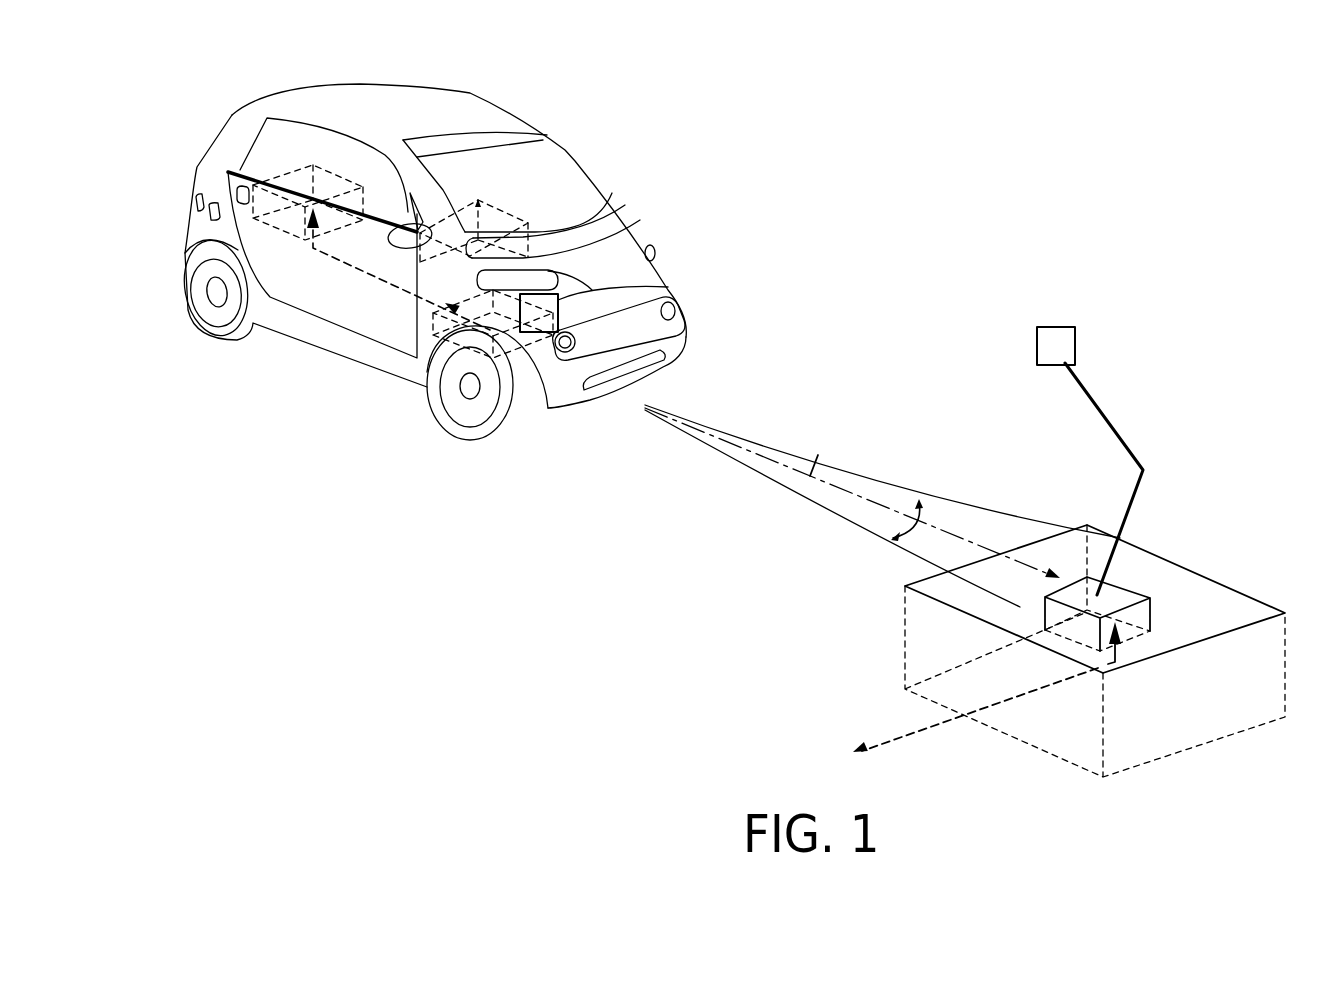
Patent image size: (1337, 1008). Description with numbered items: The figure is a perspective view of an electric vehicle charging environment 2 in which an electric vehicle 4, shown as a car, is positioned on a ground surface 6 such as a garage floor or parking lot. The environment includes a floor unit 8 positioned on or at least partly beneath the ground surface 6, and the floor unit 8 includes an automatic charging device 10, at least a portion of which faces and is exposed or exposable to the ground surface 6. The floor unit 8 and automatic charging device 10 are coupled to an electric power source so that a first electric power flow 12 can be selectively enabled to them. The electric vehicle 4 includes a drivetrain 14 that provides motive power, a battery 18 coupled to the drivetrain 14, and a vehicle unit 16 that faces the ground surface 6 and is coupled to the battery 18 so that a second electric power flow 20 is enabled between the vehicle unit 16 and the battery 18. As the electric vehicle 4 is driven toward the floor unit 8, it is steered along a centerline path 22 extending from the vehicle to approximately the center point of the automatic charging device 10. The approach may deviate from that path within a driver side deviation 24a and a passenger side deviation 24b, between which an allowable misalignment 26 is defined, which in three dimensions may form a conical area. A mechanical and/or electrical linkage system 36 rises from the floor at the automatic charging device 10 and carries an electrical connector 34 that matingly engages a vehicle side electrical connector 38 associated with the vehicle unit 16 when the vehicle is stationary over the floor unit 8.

The electric vehicle charging environment 2 is at (1198, 142).
The electric vehicle 4 is at (570, 153).
The ground surface 6 is at (380, 455).
The floor unit 8 is at (1210, 580).
The automatic charging device 10 is at (1130, 578).
The first electric power flow 12 is at (900, 735).
The drivetrain 14 is at (500, 211).
The vehicle unit 16 is at (527, 358).
The battery 18 is at (300, 167).
The second electric power flow 20 is at (381, 278).
The centerline path 22 is at (822, 451).
The driver side deviation 24a is at (956, 508).
The passenger side deviation 24b is at (738, 462).
The allowable misalignment 26 is at (892, 523).
The electrical connector 34 is at (1063, 345).
The mechanical and/or electrical linkage system 36 is at (1100, 408).
The vehicle side electrical connector 38 is at (550, 307).